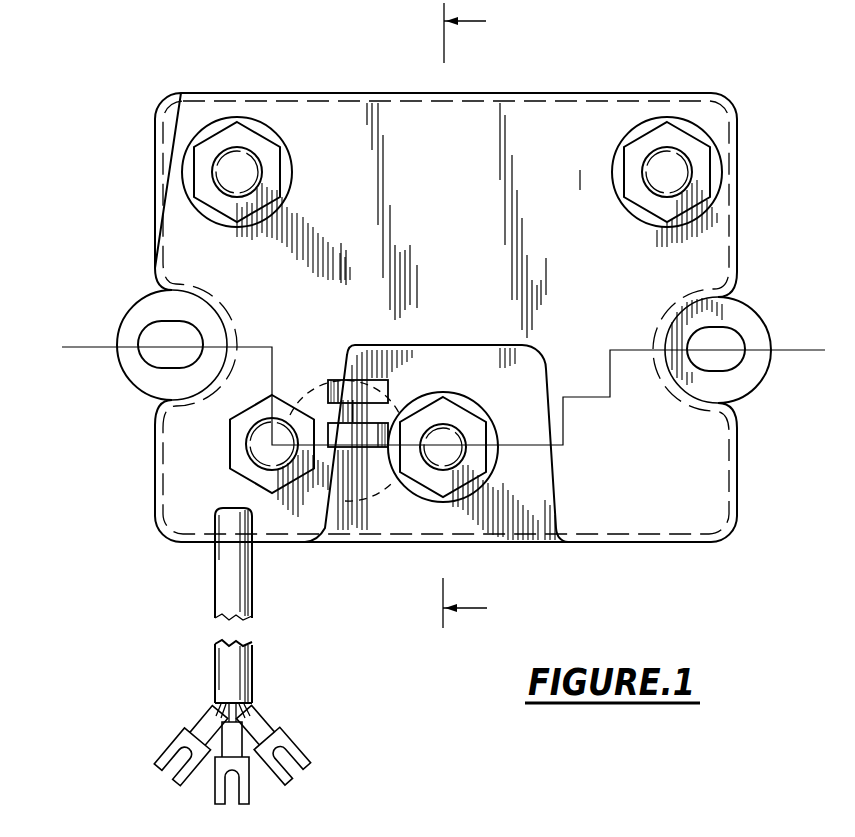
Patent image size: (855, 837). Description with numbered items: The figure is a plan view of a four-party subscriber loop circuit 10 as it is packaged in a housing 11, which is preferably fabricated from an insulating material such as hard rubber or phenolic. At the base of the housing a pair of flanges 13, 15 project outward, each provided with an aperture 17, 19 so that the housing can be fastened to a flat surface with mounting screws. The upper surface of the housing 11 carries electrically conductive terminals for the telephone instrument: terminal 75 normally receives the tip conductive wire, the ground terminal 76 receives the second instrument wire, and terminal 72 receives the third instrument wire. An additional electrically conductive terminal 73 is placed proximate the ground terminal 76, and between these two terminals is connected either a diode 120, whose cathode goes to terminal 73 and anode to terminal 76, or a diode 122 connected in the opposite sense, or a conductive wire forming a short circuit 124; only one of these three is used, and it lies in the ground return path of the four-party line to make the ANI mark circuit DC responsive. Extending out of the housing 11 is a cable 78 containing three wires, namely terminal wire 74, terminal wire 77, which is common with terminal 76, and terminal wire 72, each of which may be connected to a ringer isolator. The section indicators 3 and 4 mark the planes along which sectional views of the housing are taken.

The section line 3- 3 is at (68, 352).
The section line 4- 4 is at (467, 320).
The four-party subscriber loop circuit 10 is at (642, 54).
The housing 11 is at (185, 217).
The flange 13 is at (155, 380).
The flange 15 is at (737, 375).
The aperture 17 is at (162, 355).
The aperture 19 is at (730, 333).
The terminal 72 is at (667, 167).
The terminal 73 is at (260, 446).
The terminal wire 74 is at (185, 742).
The terminal 75 is at (236, 167).
The ground terminal 76 is at (452, 455).
The terminal wire 77 is at (217, 777).
The cable 78 is at (218, 582).
The diode 120 is at (348, 392).
The diode 122 is at (362, 433).
The conductive wire (short circuit) 124 is at (361, 542).